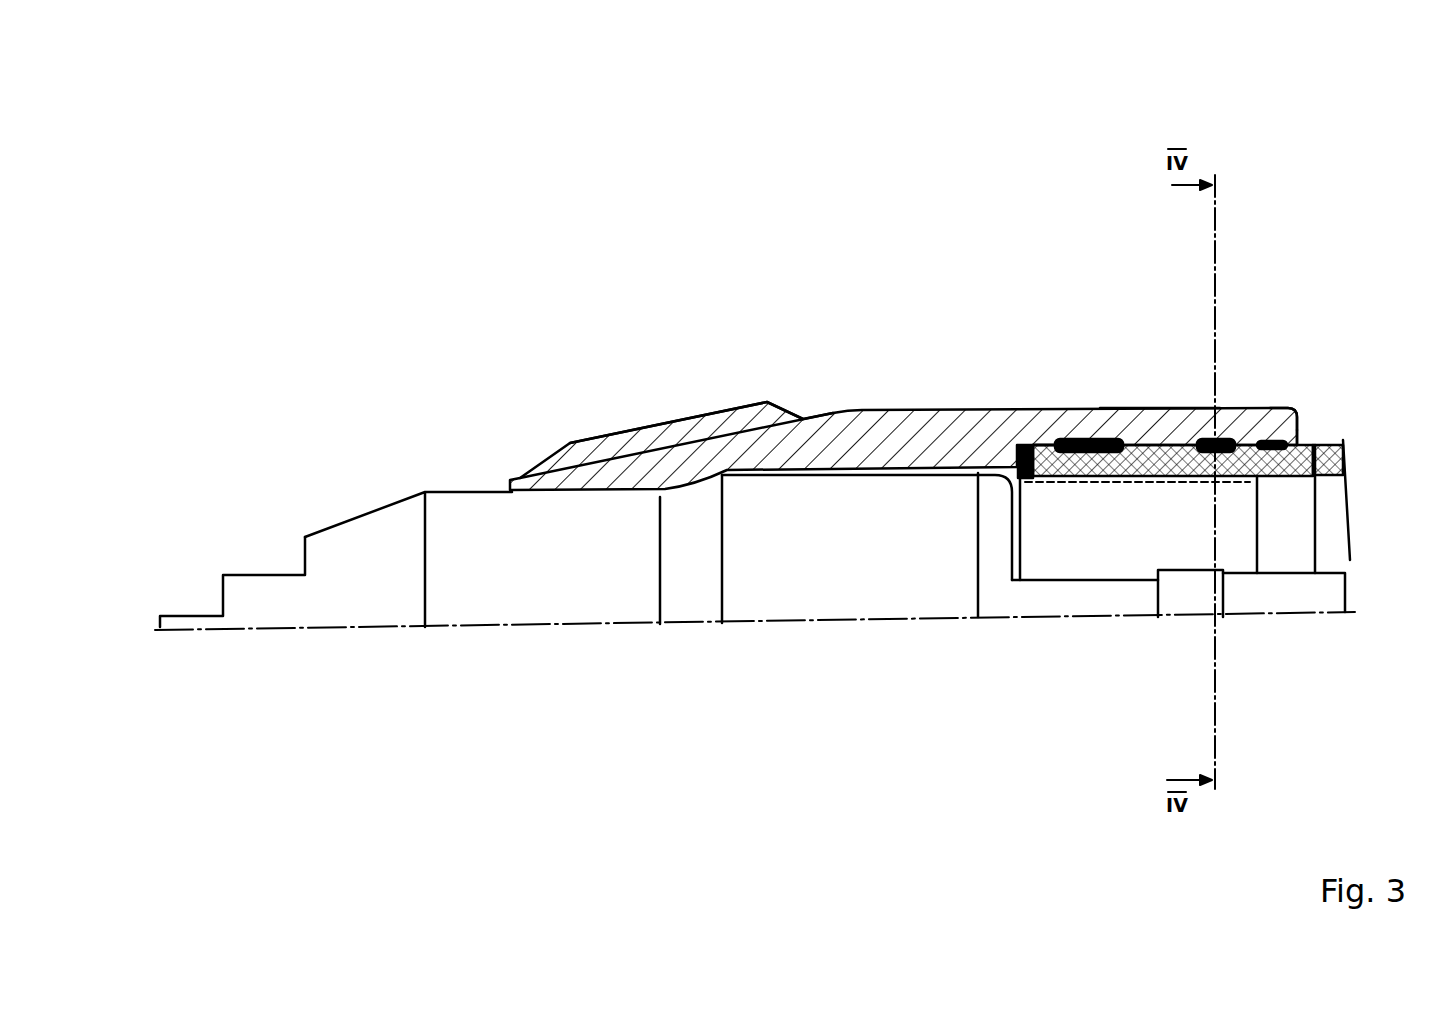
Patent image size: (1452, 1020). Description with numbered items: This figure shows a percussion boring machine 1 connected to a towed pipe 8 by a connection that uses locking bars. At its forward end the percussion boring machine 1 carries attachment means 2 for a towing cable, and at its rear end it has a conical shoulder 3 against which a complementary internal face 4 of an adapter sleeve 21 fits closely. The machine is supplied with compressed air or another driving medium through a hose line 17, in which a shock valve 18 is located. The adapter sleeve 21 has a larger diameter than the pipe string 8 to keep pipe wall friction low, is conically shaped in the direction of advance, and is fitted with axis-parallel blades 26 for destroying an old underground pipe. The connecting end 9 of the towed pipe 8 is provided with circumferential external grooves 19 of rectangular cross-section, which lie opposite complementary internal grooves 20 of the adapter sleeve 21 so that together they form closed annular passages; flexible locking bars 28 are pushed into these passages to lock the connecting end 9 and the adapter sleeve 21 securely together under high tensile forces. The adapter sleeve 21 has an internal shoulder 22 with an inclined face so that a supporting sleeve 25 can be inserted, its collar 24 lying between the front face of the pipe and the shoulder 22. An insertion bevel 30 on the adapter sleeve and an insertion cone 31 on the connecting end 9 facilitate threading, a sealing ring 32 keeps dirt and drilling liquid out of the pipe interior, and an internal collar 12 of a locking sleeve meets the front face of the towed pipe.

The percussion boring machine 1 is at (467, 542).
The attachment means 2 is at (266, 596).
The conical shoulder 3 is at (692, 524).
The internal face 4 is at (700, 477).
The towed pipe 8 is at (1345, 443).
The connecting end 9 is at (1298, 443).
The internal collar 12 is at (1343, 477).
The hose line 17 is at (1112, 598).
The shock valve 18 is at (1177, 597).
The external grooves 19 is at (1195, 479).
The internal grooves 20 is at (1213, 430).
The adapter sleeve 21 is at (622, 469).
The internal shoulder 22 is at (1026, 465).
The collar 24 is at (1010, 480).
The supporting sleeve 25 is at (1067, 480).
The blades 26 is at (738, 421).
The locking bars 28 is at (1222, 440).
The insertion bevel 30 is at (1293, 403).
The insertion cone 31 is at (1035, 447).
The sealing ring 32 is at (1062, 447).